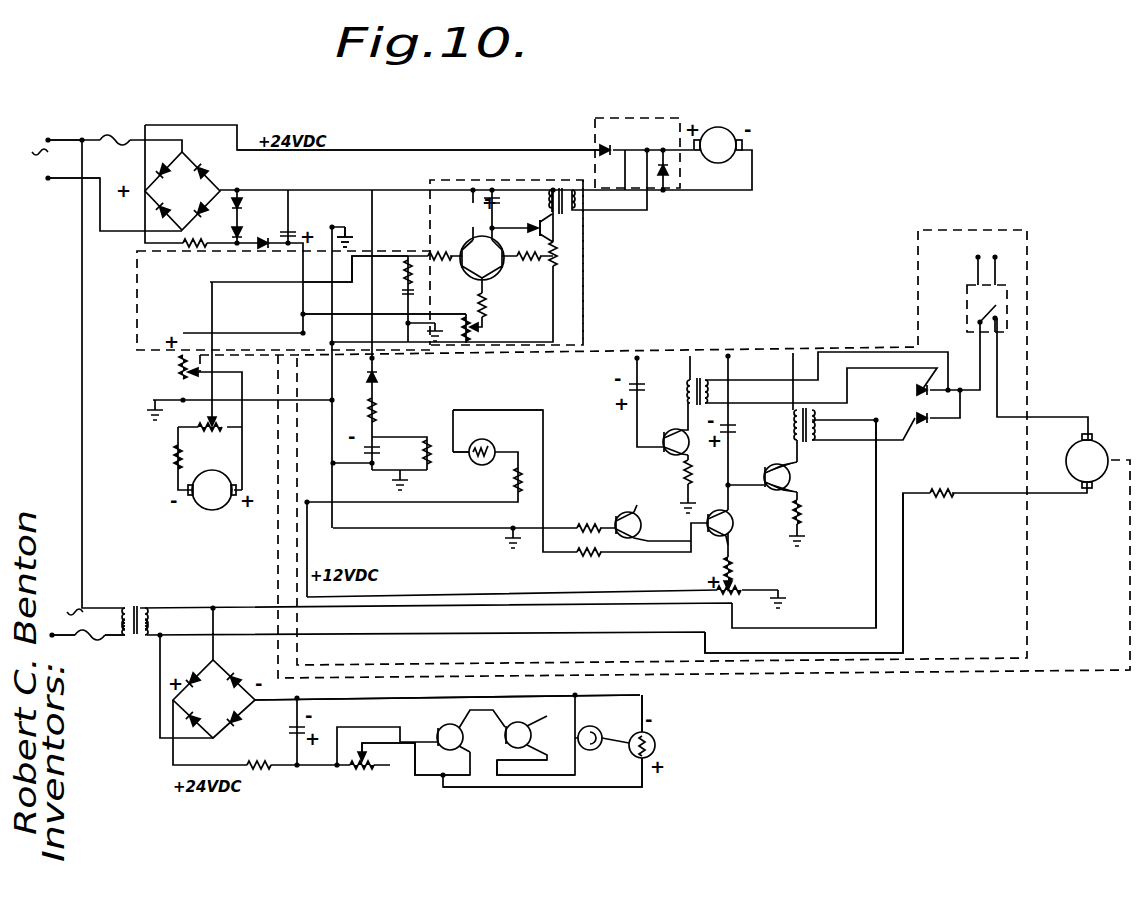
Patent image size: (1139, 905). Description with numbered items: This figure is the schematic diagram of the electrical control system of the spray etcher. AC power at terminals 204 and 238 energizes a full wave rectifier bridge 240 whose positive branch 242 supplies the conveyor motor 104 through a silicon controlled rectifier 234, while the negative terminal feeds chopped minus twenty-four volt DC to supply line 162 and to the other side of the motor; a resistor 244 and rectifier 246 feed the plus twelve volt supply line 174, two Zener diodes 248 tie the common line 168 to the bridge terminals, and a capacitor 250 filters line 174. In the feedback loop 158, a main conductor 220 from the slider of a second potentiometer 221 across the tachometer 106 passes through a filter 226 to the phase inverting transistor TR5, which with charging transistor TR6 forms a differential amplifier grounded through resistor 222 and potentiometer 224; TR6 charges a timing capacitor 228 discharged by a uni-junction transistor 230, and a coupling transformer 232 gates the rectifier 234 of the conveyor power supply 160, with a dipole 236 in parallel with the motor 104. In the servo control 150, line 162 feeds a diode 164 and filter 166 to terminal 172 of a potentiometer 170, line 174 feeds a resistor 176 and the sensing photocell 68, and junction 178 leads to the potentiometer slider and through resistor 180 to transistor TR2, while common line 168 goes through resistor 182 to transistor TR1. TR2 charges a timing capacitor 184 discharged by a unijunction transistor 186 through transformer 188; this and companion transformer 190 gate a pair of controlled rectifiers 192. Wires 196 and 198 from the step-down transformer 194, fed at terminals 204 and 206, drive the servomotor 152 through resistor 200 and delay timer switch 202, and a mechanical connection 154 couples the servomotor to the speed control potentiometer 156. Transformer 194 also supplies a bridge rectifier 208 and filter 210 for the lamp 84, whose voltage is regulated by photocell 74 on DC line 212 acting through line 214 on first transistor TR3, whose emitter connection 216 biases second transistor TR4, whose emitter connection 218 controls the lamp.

The terminal 204 is at (48, 140).
The terminal 238 is at (48, 178).
The full wave rectifier bridge 240 is at (193, 157).
The branch 242 is at (418, 132).
The Zener diodes 248 is at (242, 213).
The capacitor 250 is at (288, 227).
The supply line 162 is at (367, 210).
The resistor 244 is at (198, 247).
The rectifier 246 is at (258, 248).
The main conductor 220 is at (303, 256).
The supply line 174 is at (323, 270).
The common line 168 is at (305, 293).
The feedback loop 158 is at (453, 180).
The timing capacitor 228 is at (495, 174).
The coupling transformer 232 is at (561, 183).
The uni-junction transistor 230 is at (540, 222).
The filter 226 is at (429, 273).
The phase inverting transistor TR5 is at (464, 270).
The charging transistor TR6 is at (506, 256).
The resistor 222 is at (490, 298).
The voltage-providing potentiometer 224 is at (478, 335).
The silicon controlled rectifier 234 is at (607, 144).
The dipole 236 is at (670, 175).
The conveyor power supply 160 is at (632, 113).
The conveyor motor 104 is at (752, 116).
The speed control potentiometer 156 is at (195, 372).
The second potentiometer 221 is at (203, 443).
The tachometer 106 is at (208, 506).
The diode 164 is at (378, 377).
The filter 166 is at (375, 434).
The potentiometer 170 is at (432, 449).
The terminal 172 is at (427, 437).
The junction 178 is at (453, 453).
The sensing photocell 68 is at (484, 442).
The resistor 176 is at (521, 471).
The resistor 182 is at (580, 526).
The transistor TR1 is at (624, 510).
The resistor 180 is at (582, 555).
The companion transformer 190 is at (710, 353).
The timing capacitor 184 is at (729, 432).
The transistor TR2 is at (733, 533).
The unijunction transistor 186 is at (792, 474).
The transformer 188 is at (795, 406).
The semi-conductor controlled rectifiers 192 is at (923, 414).
The wire 196 is at (876, 463).
The servo control 150 is at (790, 344).
The delay timer switch 202 is at (1007, 317).
The servomotor 152 is at (1125, 402).
The resistor 200 is at (941, 505).
The wire 198 is at (903, 588).
The mechanical connection 154 is at (278, 540).
The step-down power supply transformer 194 is at (140, 608).
The terminal 206 is at (52, 637).
The bridge rectifier 208 is at (246, 660).
The filter 210 is at (295, 733).
The DC line 212 is at (378, 700).
The first transistor TR3 is at (425, 736).
The emitter connection 216 is at (476, 758).
The second transistor TR4 is at (540, 718).
The lamp 84 is at (620, 712).
The photocell 74 is at (654, 747).
The line 214 is at (470, 787).
The emitter connection 218 is at (543, 775).